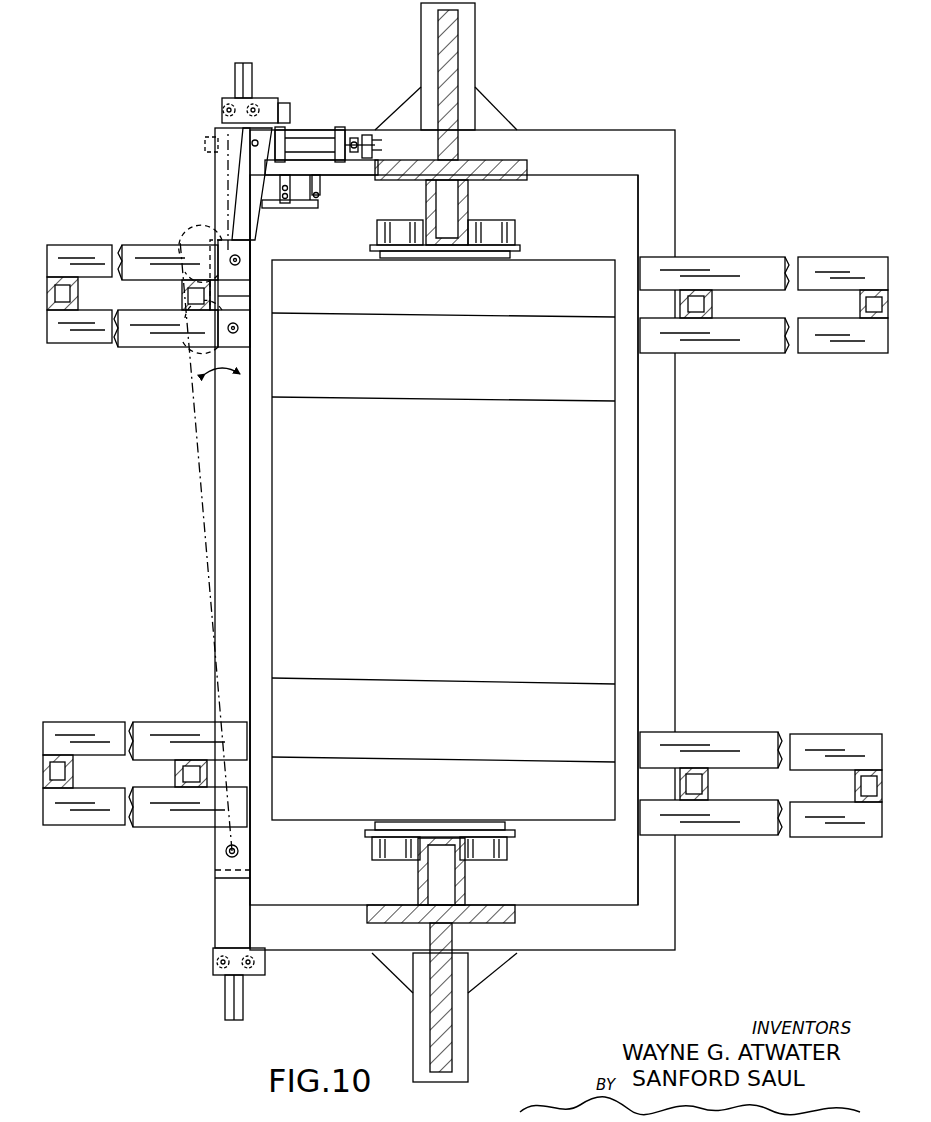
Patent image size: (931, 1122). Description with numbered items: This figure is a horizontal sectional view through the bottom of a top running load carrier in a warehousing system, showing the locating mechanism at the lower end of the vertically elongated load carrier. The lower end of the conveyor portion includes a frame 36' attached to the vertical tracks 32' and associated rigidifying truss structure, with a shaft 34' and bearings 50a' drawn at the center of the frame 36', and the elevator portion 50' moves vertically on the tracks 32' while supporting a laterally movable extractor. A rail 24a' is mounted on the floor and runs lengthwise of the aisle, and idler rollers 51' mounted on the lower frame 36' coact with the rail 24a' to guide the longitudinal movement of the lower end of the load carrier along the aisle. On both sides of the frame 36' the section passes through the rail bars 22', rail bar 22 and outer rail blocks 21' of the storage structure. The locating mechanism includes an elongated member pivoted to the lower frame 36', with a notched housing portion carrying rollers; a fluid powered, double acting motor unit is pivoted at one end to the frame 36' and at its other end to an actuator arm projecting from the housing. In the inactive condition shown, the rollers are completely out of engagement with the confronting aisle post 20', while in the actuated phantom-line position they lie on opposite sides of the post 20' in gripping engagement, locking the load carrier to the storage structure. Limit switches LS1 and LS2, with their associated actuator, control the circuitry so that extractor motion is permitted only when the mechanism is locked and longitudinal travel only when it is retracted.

The aisle post 20' is at (450, 534).
The outer rail bearing block 21' is at (456, 543).
The guide rail bar 22' is at (465, 531).
The guide rail bar 22 is at (60, 355).
The rail 24a' is at (238, 536).
The vertical tracks 32' is at (447, 541).
The shaft 34' is at (470, 542).
The frame 36' is at (487, 540).
The elevator portion 50' is at (684, 540).
The roller bearing 50a' is at (466, 545).
The idler rollers 51' is at (235, 530).
The limit switch LS1 is at (262, 197).
The limit switch LS2 is at (318, 182).